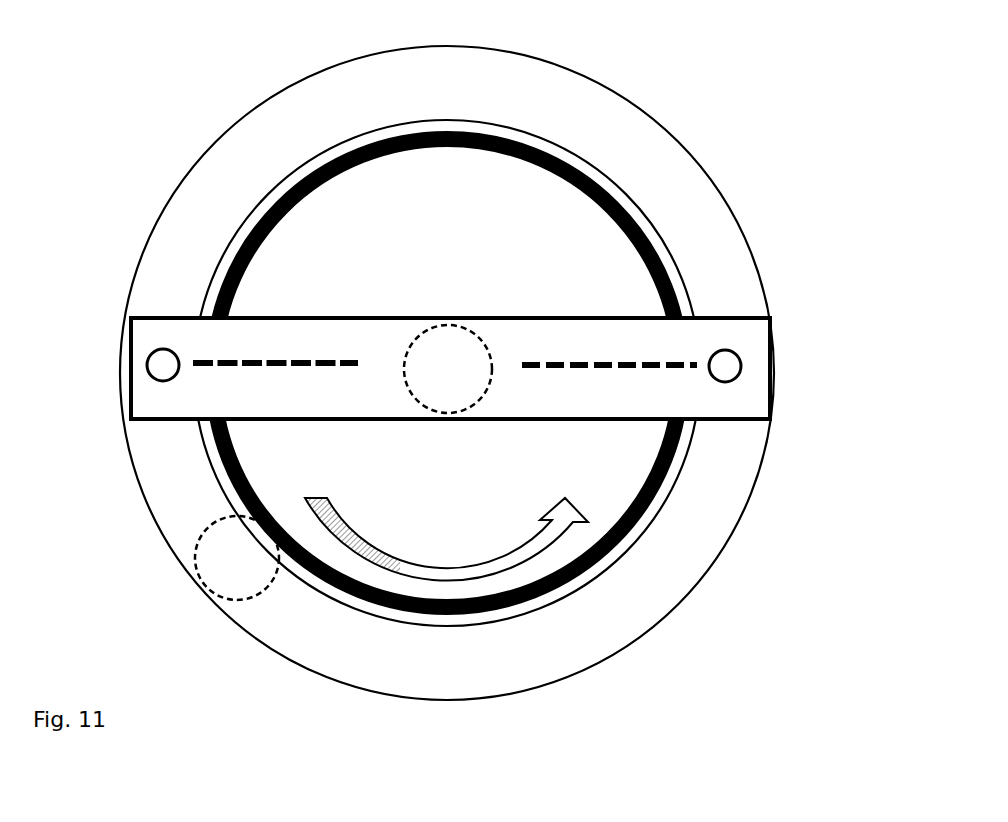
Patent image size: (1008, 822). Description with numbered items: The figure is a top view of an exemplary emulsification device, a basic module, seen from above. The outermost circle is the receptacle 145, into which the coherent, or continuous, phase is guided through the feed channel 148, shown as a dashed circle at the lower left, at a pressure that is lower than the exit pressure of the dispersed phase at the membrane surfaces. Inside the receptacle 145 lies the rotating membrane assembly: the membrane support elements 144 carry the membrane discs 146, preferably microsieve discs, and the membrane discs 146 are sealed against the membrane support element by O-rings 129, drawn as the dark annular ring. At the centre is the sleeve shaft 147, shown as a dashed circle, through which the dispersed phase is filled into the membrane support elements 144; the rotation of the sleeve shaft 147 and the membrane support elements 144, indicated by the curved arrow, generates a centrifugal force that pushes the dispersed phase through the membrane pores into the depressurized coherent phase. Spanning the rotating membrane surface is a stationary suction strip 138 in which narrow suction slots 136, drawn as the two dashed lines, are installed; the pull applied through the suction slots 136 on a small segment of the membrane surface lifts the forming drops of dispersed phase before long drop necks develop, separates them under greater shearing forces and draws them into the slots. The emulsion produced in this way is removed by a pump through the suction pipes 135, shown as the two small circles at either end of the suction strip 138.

The O-rings 129 is at (635, 220).
The suction pipes 135 is at (158, 366).
The suction slots 136 is at (226, 374).
The suction strips 138 is at (697, 397).
The membrane support elements 144 is at (610, 180).
The receptacle 145 is at (667, 120).
The membrane discs 146 is at (448, 240).
The sleeve shaft 147 is at (455, 378).
The feed channel 148 is at (237, 558).